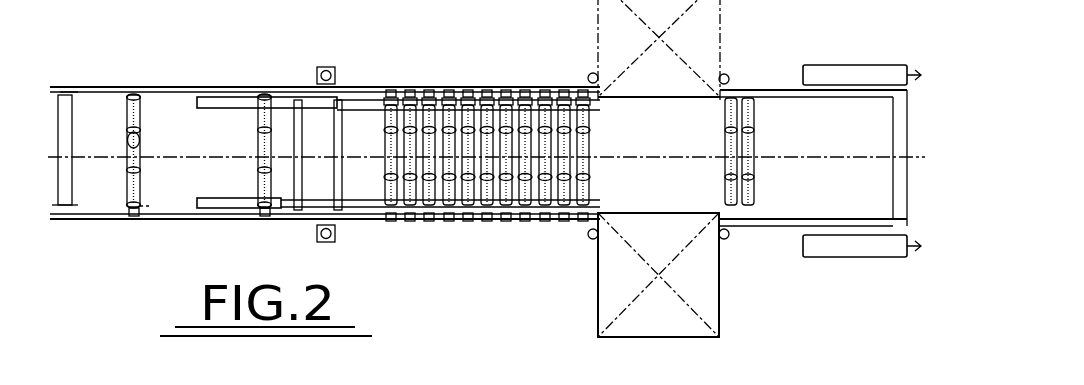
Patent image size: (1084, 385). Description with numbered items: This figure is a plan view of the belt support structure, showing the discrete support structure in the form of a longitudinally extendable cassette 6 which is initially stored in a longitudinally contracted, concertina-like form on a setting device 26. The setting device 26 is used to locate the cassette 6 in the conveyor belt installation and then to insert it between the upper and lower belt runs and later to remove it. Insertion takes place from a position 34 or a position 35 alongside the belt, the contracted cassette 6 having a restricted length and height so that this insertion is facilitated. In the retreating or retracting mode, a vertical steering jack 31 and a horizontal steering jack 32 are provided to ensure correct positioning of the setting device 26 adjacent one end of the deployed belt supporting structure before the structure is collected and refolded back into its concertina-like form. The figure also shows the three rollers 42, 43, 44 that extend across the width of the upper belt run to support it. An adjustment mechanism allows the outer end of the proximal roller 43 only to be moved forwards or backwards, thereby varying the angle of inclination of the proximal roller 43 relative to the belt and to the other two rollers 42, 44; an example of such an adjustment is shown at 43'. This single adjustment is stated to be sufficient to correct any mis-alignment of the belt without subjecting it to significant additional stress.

The cassette 6 is at (472, 214).
The setting device 26 is at (210, 101).
The vertical steering jack 31 is at (338, 72).
The horizontal steering jack 32 is at (913, 66).
The position alongside the belt 34 is at (696, 278).
The position alongside the belt 35 is at (694, 52).
The roller 42 is at (126, 142).
The proximal roller 43 is at (109, 245).
The adjusted position of proximal roller 43' is at (161, 249).
The roller 44 is at (131, 107).